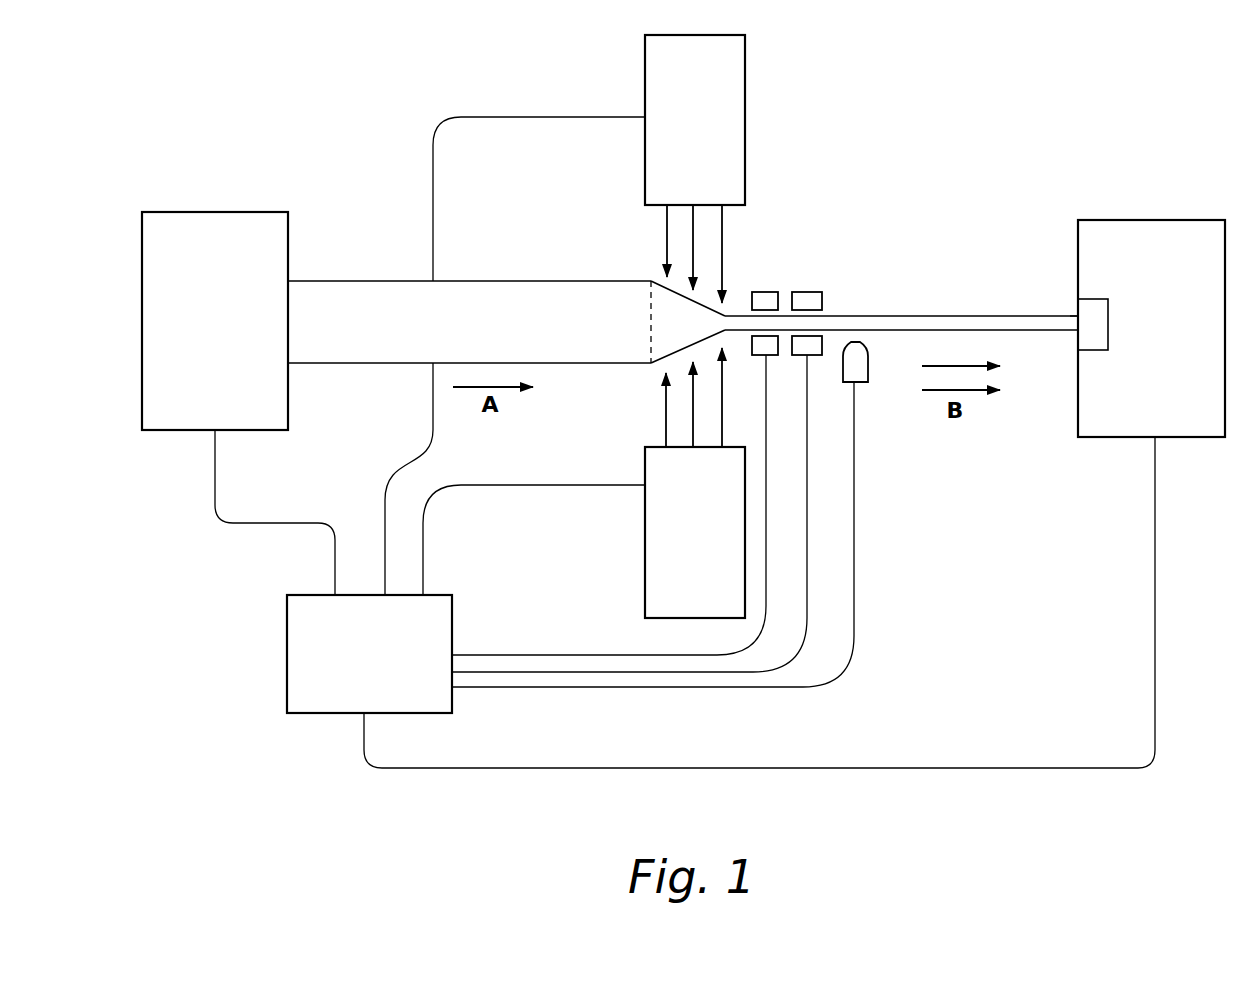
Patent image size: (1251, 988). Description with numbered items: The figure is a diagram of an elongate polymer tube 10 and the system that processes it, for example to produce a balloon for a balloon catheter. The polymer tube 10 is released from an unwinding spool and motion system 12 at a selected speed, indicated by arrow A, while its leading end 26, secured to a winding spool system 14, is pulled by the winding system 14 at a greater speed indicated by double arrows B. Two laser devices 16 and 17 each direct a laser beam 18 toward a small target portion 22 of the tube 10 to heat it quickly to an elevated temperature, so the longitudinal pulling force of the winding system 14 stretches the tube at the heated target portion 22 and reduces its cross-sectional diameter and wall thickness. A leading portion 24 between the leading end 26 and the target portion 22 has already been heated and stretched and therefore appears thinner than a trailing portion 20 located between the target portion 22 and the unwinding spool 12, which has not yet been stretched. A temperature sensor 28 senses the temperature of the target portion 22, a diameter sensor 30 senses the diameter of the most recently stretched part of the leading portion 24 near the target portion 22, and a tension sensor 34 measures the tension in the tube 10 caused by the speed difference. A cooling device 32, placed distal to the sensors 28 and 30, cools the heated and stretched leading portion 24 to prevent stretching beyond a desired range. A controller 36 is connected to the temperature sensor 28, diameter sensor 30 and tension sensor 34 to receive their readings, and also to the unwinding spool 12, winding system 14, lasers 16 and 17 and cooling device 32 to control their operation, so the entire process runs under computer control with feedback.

The elongate polymer tube 10 is at (383, 228).
The unwinding spool and motion system 12 is at (201, 398).
The winding spool system 14 is at (1159, 388).
The laser device 16 is at (681, 167).
The laser device 17 is at (681, 578).
The laser beam 18 is at (647, 222).
The trailing portion 20 is at (363, 352).
The target portion 22 is at (674, 313).
The leading portion 24 is at (914, 316).
The leading end 26 is at (1078, 316).
The temperature sensor 28 is at (752, 300).
The diameter sensor 30 is at (822, 300).
The cooling device 32 is at (868, 370).
The tension sensor 34 is at (1086, 336).
The controller 36 is at (356, 698).